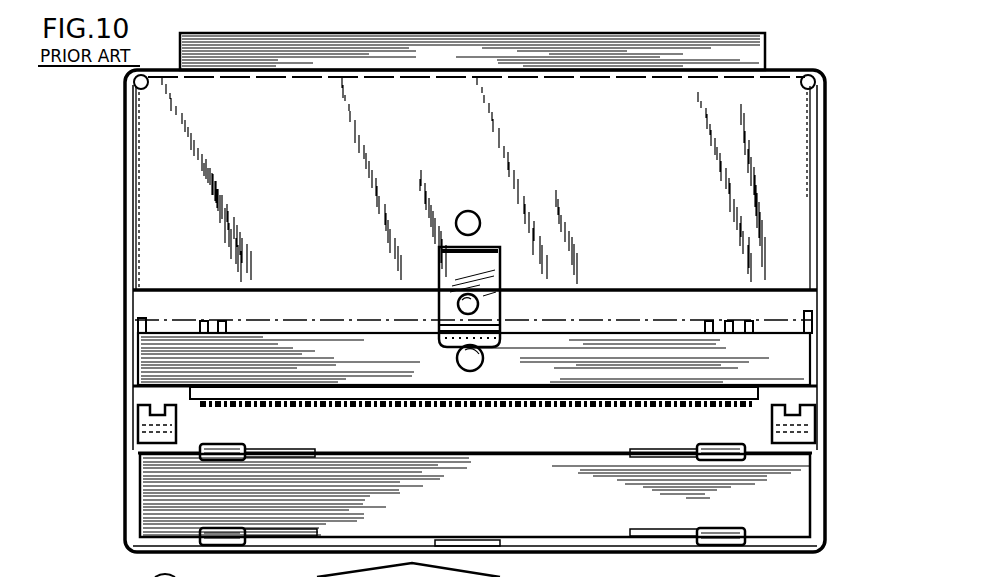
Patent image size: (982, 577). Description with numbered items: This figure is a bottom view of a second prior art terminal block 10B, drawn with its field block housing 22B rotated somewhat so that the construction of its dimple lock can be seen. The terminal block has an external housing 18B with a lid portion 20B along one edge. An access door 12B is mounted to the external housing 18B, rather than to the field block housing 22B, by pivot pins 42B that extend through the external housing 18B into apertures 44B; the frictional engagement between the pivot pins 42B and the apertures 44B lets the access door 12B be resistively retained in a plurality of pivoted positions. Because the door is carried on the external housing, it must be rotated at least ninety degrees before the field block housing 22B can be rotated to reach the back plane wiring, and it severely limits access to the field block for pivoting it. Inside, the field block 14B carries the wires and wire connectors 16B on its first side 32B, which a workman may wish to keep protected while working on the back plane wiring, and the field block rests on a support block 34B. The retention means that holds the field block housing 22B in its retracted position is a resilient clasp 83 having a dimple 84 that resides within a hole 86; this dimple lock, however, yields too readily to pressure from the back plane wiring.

The keyboard housing 10B is at (833, 109).
The access door 12B is at (482, 501).
The field block 14B is at (190, 394).
The wire connectors 16B is at (203, 330).
The external housing 18B is at (642, 173).
The lid 20B is at (765, 48).
The field block housing 22B is at (781, 346).
The first side 32B is at (752, 403).
The support block 34B is at (138, 335).
The pivot pins 42B is at (125, 432).
The apertures 44B is at (138, 407).
The resilient clasp 83 is at (500, 298).
The dimple 84 is at (458, 305).
The hole 86 is at (483, 362).